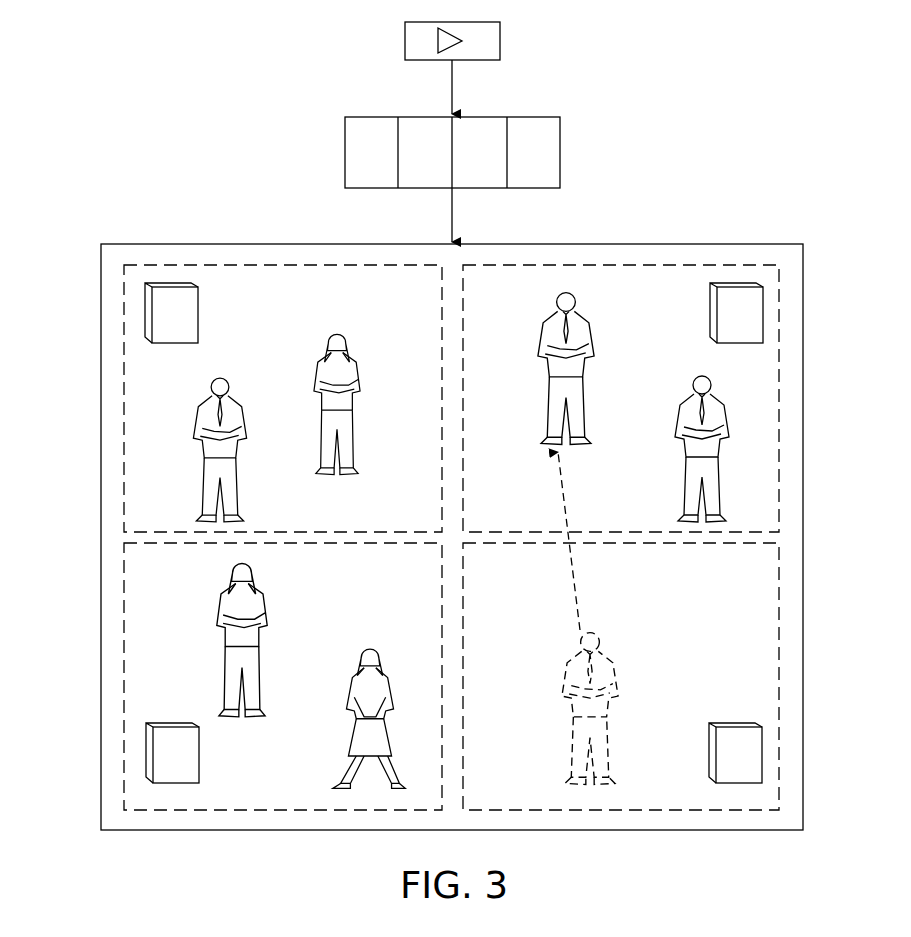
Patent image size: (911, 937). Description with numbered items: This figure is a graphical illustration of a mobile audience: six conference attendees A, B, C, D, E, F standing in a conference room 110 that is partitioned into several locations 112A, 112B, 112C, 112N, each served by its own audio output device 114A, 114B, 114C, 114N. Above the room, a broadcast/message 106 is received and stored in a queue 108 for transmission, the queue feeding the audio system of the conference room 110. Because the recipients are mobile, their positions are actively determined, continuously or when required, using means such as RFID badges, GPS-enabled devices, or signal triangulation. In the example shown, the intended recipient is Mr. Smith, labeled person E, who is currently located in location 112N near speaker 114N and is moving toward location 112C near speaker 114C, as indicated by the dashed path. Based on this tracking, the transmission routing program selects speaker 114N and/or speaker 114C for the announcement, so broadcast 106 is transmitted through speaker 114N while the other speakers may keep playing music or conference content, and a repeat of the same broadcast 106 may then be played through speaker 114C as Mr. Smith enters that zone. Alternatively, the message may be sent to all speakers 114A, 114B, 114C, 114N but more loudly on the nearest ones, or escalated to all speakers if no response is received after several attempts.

The broadcast/message 106 is at (405, 40).
The queue 108 is at (345, 152).
The conference room 110 is at (122, 244).
The location 112A is at (150, 397).
The location 112B is at (152, 678).
The location 112C is at (753, 397).
The location 112N is at (753, 678).
The audio output device 114A is at (150, 318).
The audio output device 114B is at (152, 757).
The audio output device 114C is at (753, 318).
The audio output device 114N is at (753, 755).
The conference attendee A is at (231, 384).
The conference attendee B is at (347, 340).
The conference attendee C is at (225, 596).
The conference attendee D is at (688, 406).
The conference attendee E is at (548, 322).
The conference attendee F is at (360, 674).